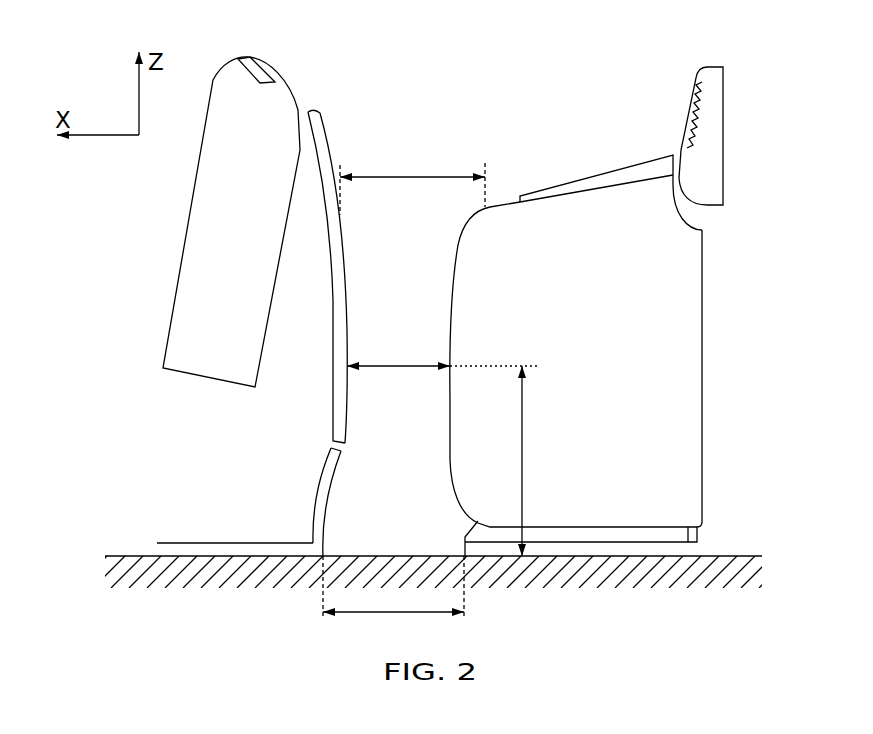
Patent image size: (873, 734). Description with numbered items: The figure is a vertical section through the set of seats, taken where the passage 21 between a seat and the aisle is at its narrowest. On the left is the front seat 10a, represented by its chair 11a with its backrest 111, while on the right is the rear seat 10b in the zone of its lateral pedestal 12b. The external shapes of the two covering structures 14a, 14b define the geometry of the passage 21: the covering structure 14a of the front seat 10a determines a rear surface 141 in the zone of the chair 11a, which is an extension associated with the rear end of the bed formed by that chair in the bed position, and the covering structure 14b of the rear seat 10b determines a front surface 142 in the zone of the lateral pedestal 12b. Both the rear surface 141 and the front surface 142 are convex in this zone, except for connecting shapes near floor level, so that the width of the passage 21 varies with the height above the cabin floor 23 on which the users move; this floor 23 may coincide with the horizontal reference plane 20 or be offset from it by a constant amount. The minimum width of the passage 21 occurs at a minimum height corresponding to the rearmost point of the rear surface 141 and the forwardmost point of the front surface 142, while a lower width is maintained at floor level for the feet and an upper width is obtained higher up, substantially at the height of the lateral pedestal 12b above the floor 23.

The front seat 10a is at (145, 415).
The chair 11a is at (145, 247).
The backrest 111 is at (202, 333).
The covering structure 14a is at (327, 140).
The rear surface 141 is at (343, 252).
The front surface 142 is at (452, 463).
The rear seat 10b is at (578, 115).
The lateral pedestal 12b is at (728, 408).
The covering structure 14b is at (662, 313).
The horizontal reference plane 20 is at (125, 557).
The passage 21 is at (413, 296).
The cabin floor 23 is at (735, 556).